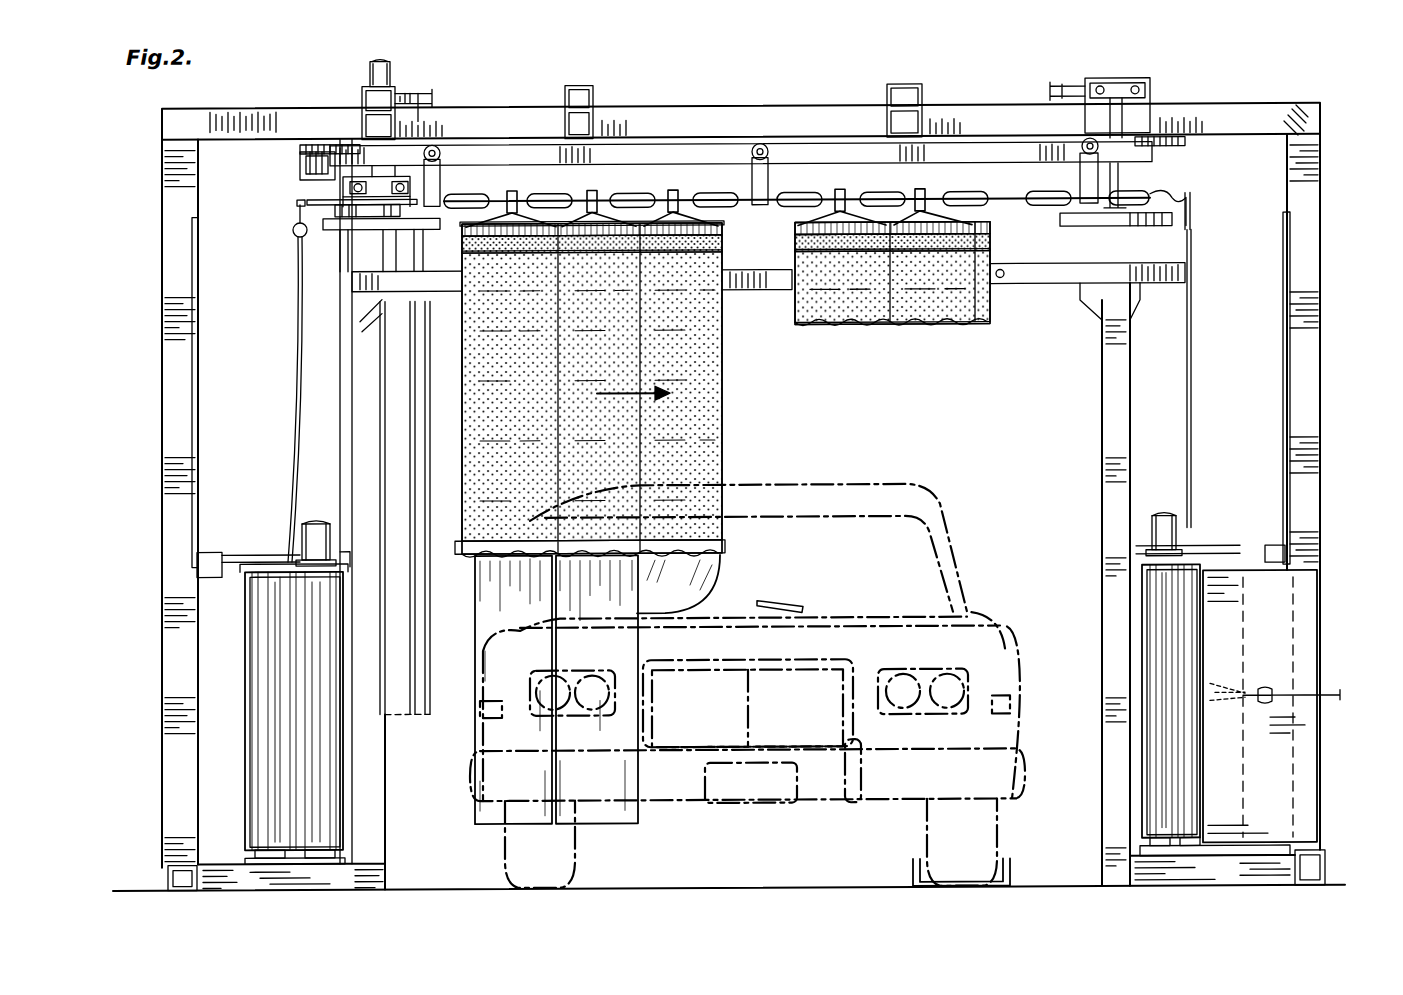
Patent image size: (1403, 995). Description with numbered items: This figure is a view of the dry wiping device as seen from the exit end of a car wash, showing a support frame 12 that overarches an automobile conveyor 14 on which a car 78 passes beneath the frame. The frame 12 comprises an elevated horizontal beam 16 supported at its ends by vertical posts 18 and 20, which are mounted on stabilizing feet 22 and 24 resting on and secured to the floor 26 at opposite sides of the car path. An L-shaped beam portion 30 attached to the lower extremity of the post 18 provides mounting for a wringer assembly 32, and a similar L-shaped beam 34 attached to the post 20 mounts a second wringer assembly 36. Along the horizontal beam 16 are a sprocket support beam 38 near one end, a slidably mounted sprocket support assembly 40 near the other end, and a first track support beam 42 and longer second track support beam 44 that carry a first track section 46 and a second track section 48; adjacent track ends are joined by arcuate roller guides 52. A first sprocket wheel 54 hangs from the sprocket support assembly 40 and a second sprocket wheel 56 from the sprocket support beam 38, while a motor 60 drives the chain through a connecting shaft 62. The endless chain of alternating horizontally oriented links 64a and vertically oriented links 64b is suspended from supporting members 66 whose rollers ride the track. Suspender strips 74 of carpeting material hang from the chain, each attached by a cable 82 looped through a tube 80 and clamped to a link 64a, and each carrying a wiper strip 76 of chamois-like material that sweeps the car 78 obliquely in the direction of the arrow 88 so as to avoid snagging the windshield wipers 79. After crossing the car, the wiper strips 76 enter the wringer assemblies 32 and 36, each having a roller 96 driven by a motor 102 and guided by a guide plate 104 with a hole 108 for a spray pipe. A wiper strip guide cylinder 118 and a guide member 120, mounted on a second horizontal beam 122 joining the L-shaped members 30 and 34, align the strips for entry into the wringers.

The support frame 12 is at (158, 129).
The automobile conveyor 14 is at (1010, 866).
The elevated horizontal beam 16 is at (745, 110).
The vertical post 18 is at (168, 382).
The vertical post 20 is at (1312, 384).
The stabilizing foot 22 is at (168, 872).
The stabilizing foot 24 is at (1330, 872).
The floor 26 is at (770, 870).
The L-shaped beam portion 30 is at (373, 888).
The wringer assembly 32 is at (240, 708).
The L-shaped beam 34 is at (1150, 888).
The second wringer assembly 36 is at (1138, 678).
The sprocket support beam 38 is at (365, 118).
The sprocket support assembly 40 is at (1150, 112).
The first track support beam 42 is at (912, 90).
The second track support beam 44 is at (590, 90).
The first track section 46 is at (688, 158).
The second track section 48 is at (305, 163).
The arcuate roller guides 52 is at (302, 146).
The first sprocket wheel 54 is at (1098, 218).
The second sprocket wheel 56 is at (318, 214).
The motor 60 is at (390, 72).
The connecting shaft 62 is at (345, 184).
The horizontally oriented links 64a is at (998, 206).
The vertically oriented links 64b is at (1005, 212).
The supporting members 66 is at (440, 178).
The suspender strips 74 is at (300, 357).
The wiper strip 76 is at (492, 592).
The car 78 is at (940, 535).
The windshield wipers 79 is at (783, 605).
The tube 80 is at (722, 238).
The cable 82 is at (732, 216).
The arrow 88 is at (633, 407).
The roller 96 is at (258, 824).
The motor 102 is at (314, 520).
The guide plate 104 is at (1290, 632).
The hole 108 is at (1318, 684).
The wiper strip guide cylinder 118 is at (418, 408).
The guide member 120 is at (1190, 277).
The second horizontal beam 122 is at (757, 290).